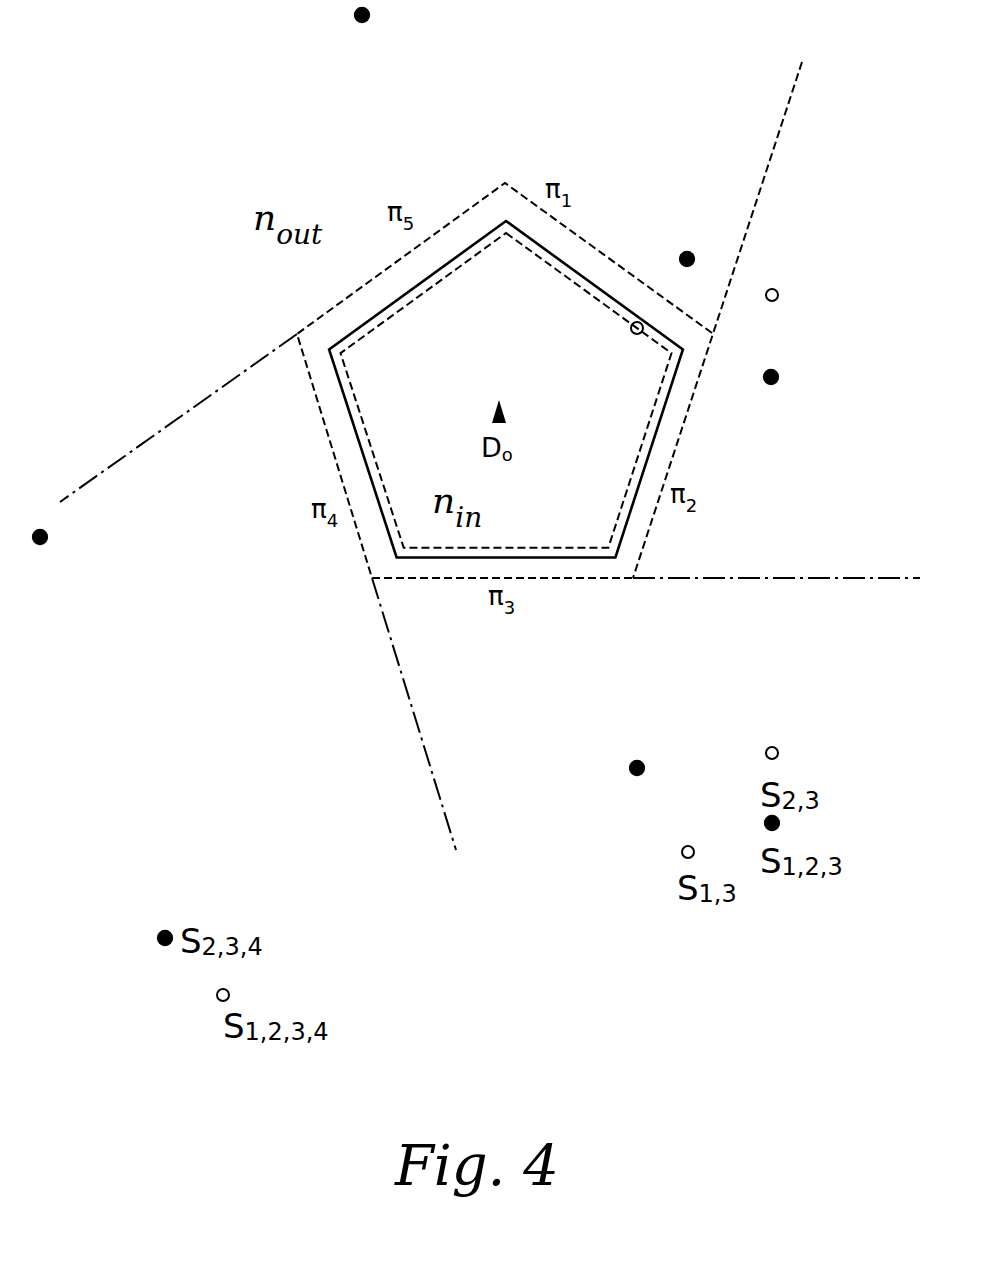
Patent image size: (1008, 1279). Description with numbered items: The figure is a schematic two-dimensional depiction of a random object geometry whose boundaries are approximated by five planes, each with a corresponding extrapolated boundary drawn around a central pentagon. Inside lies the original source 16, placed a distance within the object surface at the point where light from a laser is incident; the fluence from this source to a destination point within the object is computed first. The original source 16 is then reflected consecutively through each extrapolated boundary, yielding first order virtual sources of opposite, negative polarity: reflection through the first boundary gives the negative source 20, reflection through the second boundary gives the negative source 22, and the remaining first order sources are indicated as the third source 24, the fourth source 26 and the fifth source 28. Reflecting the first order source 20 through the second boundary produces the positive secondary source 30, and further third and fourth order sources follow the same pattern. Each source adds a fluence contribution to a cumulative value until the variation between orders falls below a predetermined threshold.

The original source 16 is at (630, 329).
The negative source 20 is at (687, 251).
The negative source 22 is at (778, 376).
The first-order virtual source S3 24 is at (637, 760).
The first-order virtual source S4 26 is at (48, 537).
The first-order virtual source S5 28 is at (354, 15).
The secondary source 30 is at (775, 301).